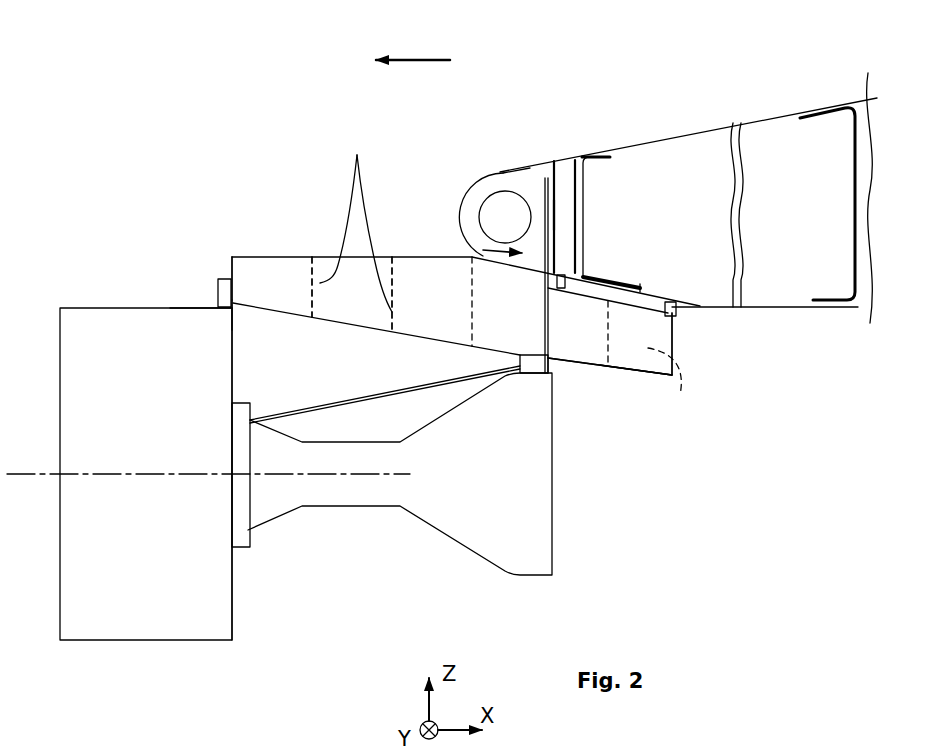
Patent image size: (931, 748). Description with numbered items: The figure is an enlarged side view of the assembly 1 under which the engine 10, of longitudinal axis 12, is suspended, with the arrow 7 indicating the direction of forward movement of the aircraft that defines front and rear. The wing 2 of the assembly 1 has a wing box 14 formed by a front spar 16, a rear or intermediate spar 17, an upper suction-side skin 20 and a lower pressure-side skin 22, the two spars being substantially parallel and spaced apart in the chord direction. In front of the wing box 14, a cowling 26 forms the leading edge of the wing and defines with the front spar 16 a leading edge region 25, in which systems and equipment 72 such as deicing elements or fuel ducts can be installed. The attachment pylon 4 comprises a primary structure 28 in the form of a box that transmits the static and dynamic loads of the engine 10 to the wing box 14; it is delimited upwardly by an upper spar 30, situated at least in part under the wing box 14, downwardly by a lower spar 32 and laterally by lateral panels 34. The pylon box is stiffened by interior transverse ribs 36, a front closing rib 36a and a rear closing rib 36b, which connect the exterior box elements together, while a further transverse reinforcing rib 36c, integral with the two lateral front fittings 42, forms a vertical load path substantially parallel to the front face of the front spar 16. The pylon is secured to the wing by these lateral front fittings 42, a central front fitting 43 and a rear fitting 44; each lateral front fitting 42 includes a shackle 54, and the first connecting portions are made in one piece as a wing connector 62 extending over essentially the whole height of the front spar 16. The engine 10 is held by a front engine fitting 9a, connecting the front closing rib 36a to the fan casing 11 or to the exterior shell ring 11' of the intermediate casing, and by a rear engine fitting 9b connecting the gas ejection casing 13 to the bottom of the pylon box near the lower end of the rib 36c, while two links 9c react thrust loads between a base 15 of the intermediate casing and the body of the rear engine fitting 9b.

The assembly 1 is at (218, 180).
The wing 2 is at (746, 104).
The attachment pylon 4 is at (272, 234).
The arrow 7 is at (425, 58).
The front engine fitting 9a is at (218, 292).
The rear engine fitting 9b is at (533, 373).
The links 9c is at (407, 388).
The engine 10 is at (181, 660).
The fan casing 11 is at (189, 338).
The exterior shell ring 11' is at (252, 336).
The longitudinal axis 12 is at (18, 478).
The casing 13 is at (487, 387).
The wing box 14 is at (864, 278).
The base 15 is at (241, 533).
The front spar 16 is at (587, 187).
The rear spar 17 is at (850, 145).
The upper suction-side skin 20 is at (680, 137).
The lower pressure-side skin 22 is at (748, 308).
The leading edge region 25 is at (530, 178).
The cowling 26 is at (490, 173).
The primary structure 28 is at (321, 252).
The upper spar 30 is at (384, 257).
The lower spar 32 is at (613, 366).
The lateral panels 34 is at (638, 357).
The interior transverse ribs 36 is at (356, 222).
The front closing rib 36a is at (232, 265).
The rear closing rib 36b is at (672, 338).
The transverse reinforcing rib 36c is at (550, 337).
The lateral front fittings 42 is at (473, 238).
The central front fitting 43 is at (560, 290).
The rear fitting 44 is at (677, 308).
The shackle 54 is at (552, 208).
The wing connector 62 is at (563, 175).
The systems and equipment 72 is at (495, 205).